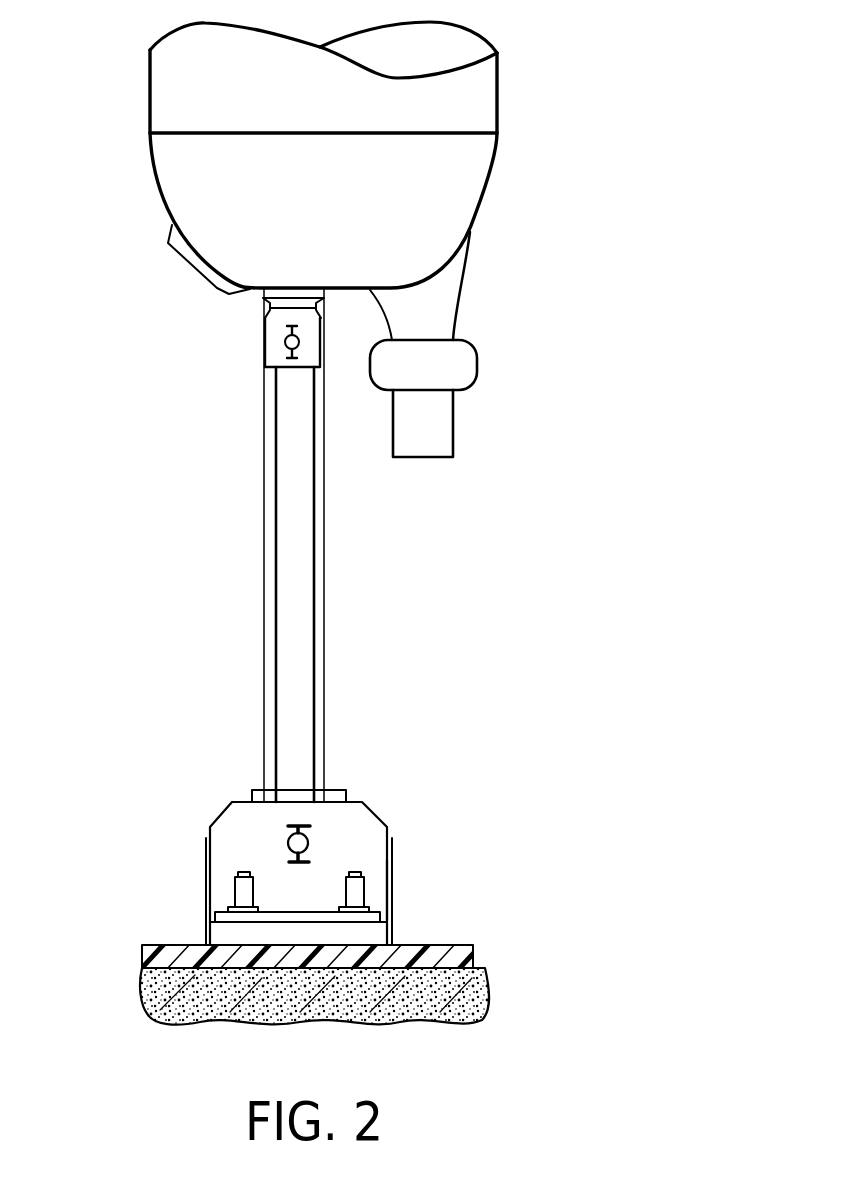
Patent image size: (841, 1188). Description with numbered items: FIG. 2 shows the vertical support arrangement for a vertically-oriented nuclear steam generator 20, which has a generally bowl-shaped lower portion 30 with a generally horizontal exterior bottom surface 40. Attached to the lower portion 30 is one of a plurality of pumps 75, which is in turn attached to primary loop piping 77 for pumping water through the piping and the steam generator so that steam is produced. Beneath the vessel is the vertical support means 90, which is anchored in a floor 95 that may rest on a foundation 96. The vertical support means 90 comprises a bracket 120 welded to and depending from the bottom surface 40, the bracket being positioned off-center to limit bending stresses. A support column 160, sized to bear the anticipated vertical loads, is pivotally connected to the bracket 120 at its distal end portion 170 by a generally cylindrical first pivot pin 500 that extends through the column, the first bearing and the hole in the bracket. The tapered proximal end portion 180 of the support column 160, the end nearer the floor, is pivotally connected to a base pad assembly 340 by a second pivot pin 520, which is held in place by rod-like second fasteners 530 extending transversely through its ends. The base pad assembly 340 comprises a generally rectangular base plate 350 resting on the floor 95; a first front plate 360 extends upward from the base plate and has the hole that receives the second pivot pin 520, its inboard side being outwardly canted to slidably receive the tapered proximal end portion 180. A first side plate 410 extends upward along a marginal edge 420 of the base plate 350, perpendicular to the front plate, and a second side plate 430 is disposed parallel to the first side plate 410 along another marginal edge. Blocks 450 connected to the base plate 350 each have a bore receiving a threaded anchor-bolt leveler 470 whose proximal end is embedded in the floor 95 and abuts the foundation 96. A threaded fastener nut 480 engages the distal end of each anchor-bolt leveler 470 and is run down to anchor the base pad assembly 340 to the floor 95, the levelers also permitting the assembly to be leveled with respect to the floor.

The steam generator 20 is at (497, 75).
The lower portion 30 is at (497, 117).
The bottom surface 40 is at (328, 292).
The pump 75 is at (463, 353).
The primary loop piping 77 is at (447, 437).
The vertical support means 90 is at (162, 551).
The bracket 120 is at (270, 307).
The support column 160 is at (265, 485).
The distal end portion 170 is at (272, 358).
The proximal end portion 180 is at (258, 797).
The base pad assembly 340 is at (424, 797).
The base plate 350 is at (373, 932).
The first front plate 360 is at (375, 852).
The first side plate 410 is at (207, 852).
The marginal edge 420 is at (212, 932).
The second side plate 430 is at (392, 887).
The block 450 is at (228, 908).
The anchor-bolt leveler 470 is at (238, 872).
The fastener nut 480 is at (235, 880).
The first pivot pin 500 is at (285, 345).
The second pivot pin 520 is at (310, 850).
The second fastener 530 is at (307, 828).
The floor 95 is at (463, 957).
The foundation 96 is at (477, 995).